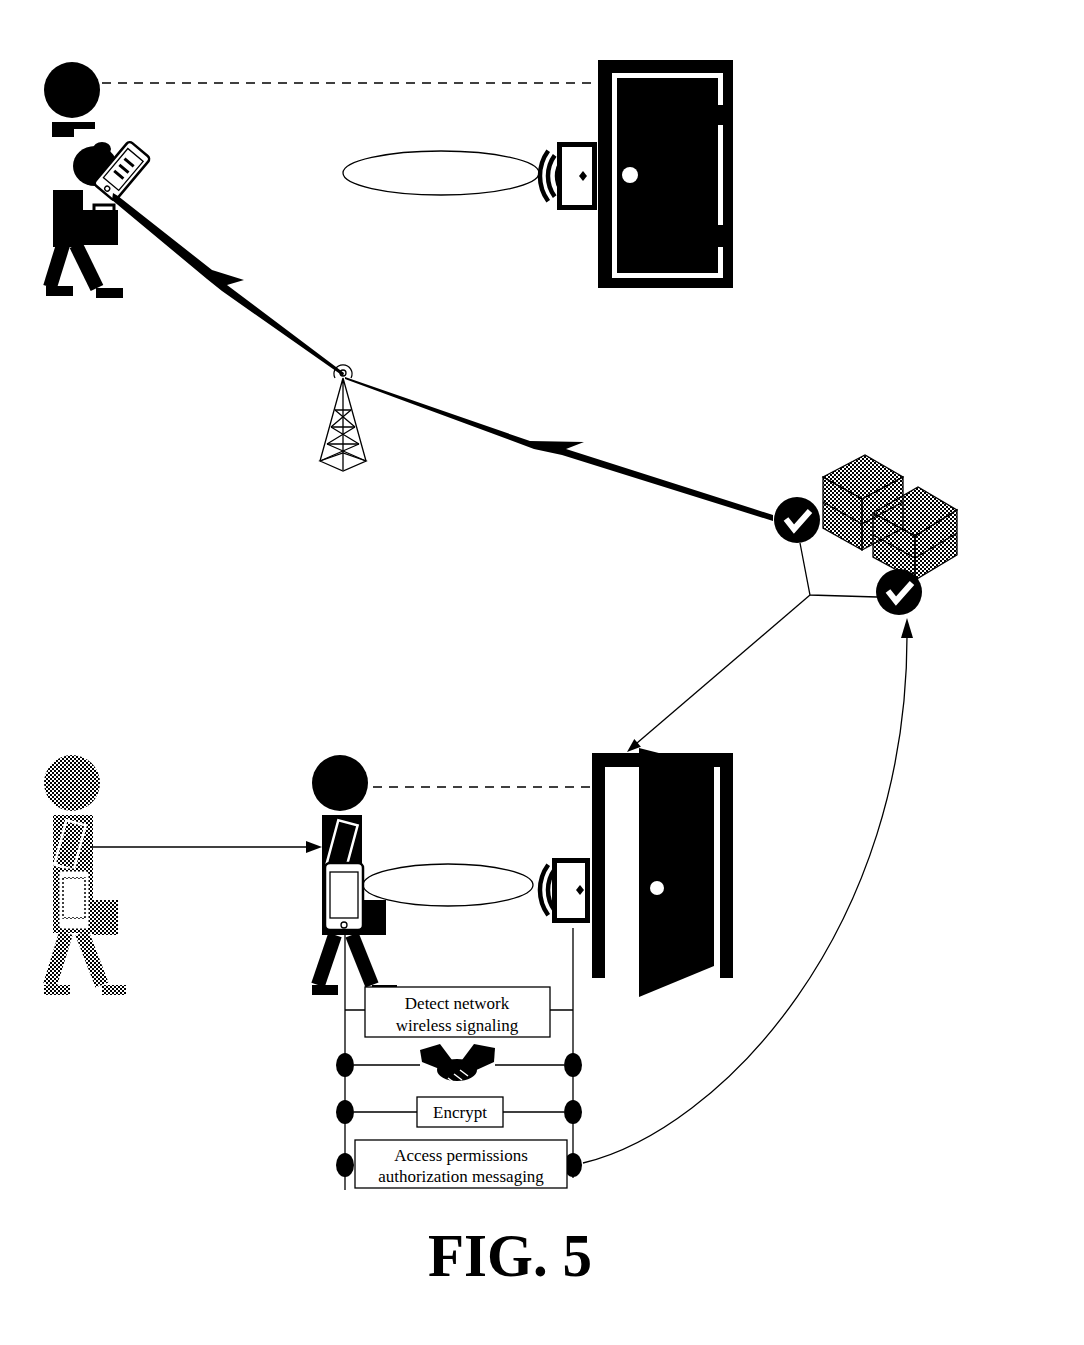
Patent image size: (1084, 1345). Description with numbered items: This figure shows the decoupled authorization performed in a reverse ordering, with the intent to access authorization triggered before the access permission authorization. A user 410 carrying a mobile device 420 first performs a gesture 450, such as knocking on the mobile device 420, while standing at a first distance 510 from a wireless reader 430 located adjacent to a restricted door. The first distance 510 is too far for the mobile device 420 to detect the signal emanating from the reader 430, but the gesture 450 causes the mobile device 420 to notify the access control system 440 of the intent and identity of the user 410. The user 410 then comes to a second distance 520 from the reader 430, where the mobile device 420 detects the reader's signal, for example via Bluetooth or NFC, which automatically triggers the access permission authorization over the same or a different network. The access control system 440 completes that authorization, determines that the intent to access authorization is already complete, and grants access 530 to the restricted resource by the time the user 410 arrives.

The user 410 is at (70, 62).
The mobile device 420 is at (143, 163).
The wireless reader 430 is at (568, 140).
The access control system 440 is at (893, 483).
The gesture or action 450 is at (118, 160).
The first distance 510 is at (263, 83).
The second distance 520 is at (470, 787).
The grant of access 530 is at (724, 668).